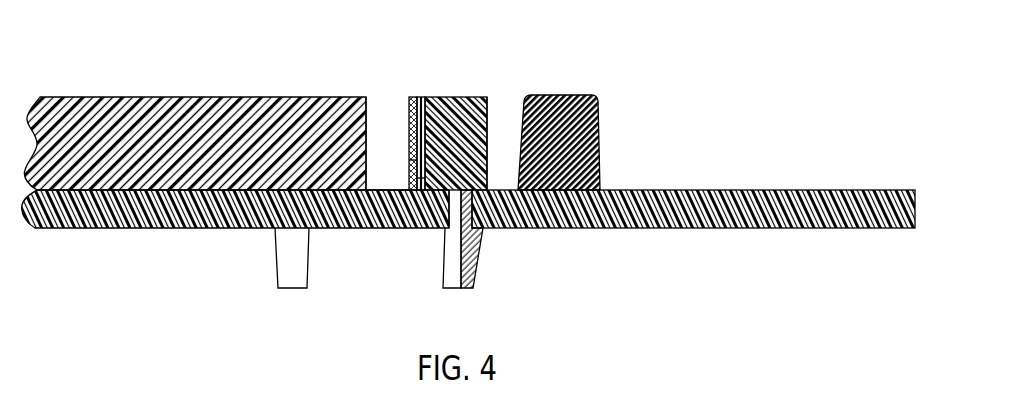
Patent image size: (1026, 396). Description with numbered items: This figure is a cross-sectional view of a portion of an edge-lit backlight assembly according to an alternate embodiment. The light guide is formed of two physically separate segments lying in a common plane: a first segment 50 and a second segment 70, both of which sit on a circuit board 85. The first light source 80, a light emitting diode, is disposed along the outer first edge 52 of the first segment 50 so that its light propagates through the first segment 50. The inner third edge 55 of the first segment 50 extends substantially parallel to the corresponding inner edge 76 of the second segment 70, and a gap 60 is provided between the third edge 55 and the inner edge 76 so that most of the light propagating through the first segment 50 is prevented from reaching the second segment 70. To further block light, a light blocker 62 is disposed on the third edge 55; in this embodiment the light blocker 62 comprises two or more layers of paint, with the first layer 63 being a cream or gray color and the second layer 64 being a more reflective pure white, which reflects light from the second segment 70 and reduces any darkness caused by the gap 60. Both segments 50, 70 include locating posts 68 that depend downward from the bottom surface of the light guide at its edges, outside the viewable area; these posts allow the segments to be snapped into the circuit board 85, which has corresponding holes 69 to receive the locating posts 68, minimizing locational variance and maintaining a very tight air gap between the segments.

The first segment 50 is at (432, 100).
The first edge 52 is at (487, 120).
The third edge 55 is at (409, 118).
The gap 60 is at (388, 85).
The light blocker 62 is at (419, 82).
The first layer 63 is at (416, 178).
The second layer 64 is at (410, 165).
The locating posts 68 is at (277, 272).
The holes 69 is at (455, 225).
The second segment 70 is at (62, 108).
The inner edge 76 is at (368, 116).
The first light source 80 is at (586, 96).
The circuit board 85 is at (697, 190).